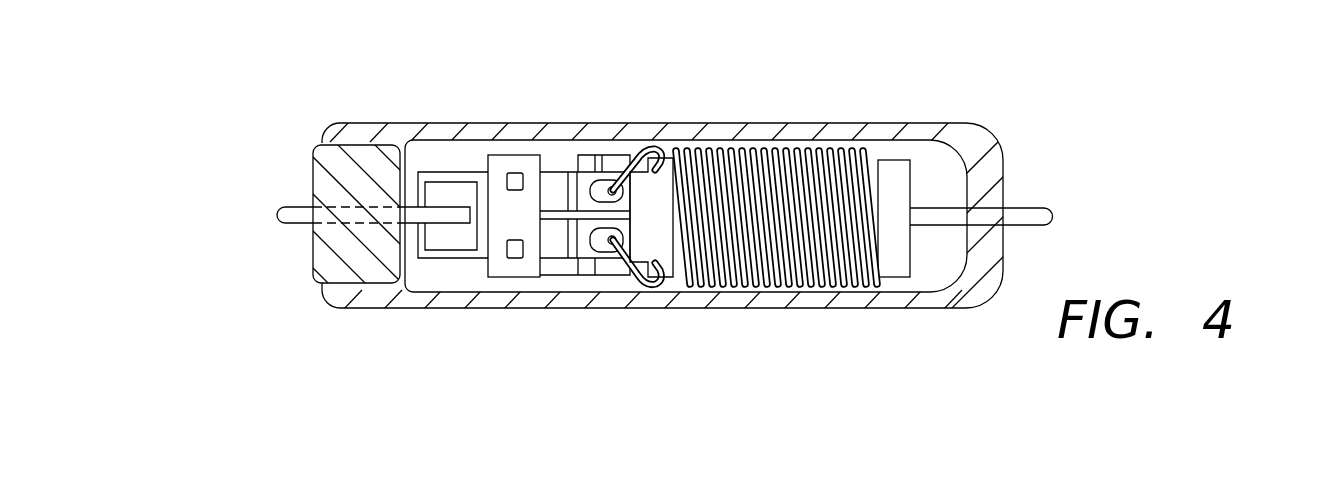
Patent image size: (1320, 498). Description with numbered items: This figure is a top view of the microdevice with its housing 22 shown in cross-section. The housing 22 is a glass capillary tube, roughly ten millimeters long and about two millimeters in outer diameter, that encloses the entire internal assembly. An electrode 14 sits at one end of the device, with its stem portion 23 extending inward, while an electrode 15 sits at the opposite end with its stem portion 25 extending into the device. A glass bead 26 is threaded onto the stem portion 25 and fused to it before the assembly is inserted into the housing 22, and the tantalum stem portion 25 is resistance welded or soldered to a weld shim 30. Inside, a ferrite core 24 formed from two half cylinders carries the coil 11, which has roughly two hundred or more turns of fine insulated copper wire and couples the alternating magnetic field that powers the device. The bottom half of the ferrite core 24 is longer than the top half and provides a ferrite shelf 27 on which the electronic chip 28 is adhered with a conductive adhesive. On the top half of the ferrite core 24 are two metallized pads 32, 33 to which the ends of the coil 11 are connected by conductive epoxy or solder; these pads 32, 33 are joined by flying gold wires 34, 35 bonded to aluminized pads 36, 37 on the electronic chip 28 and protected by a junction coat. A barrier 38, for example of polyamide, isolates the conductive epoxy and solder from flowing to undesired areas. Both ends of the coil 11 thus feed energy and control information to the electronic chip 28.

The coil 11 is at (711, 160).
The electrode 14 is at (1075, 136).
The electrode 15 is at (238, 138).
The housing 22 is at (765, 124).
The stem portion 23 is at (927, 217).
The ferrite core 24 is at (655, 225).
The stem portion 25 is at (413, 216).
The glass bead 26 is at (333, 262).
The ferrite shelf 27 is at (482, 245).
The electronic chip 28 is at (570, 273).
The weld shim 30 is at (447, 238).
The metallized pad 32 is at (606, 172).
The metallized pad 33 is at (603, 260).
The gold wire 34 is at (552, 182).
The gold wire 35 is at (541, 245).
The aluminized pad 36 is at (513, 173).
The aluminized pad 37 is at (508, 255).
The barrier 38 is at (583, 165).